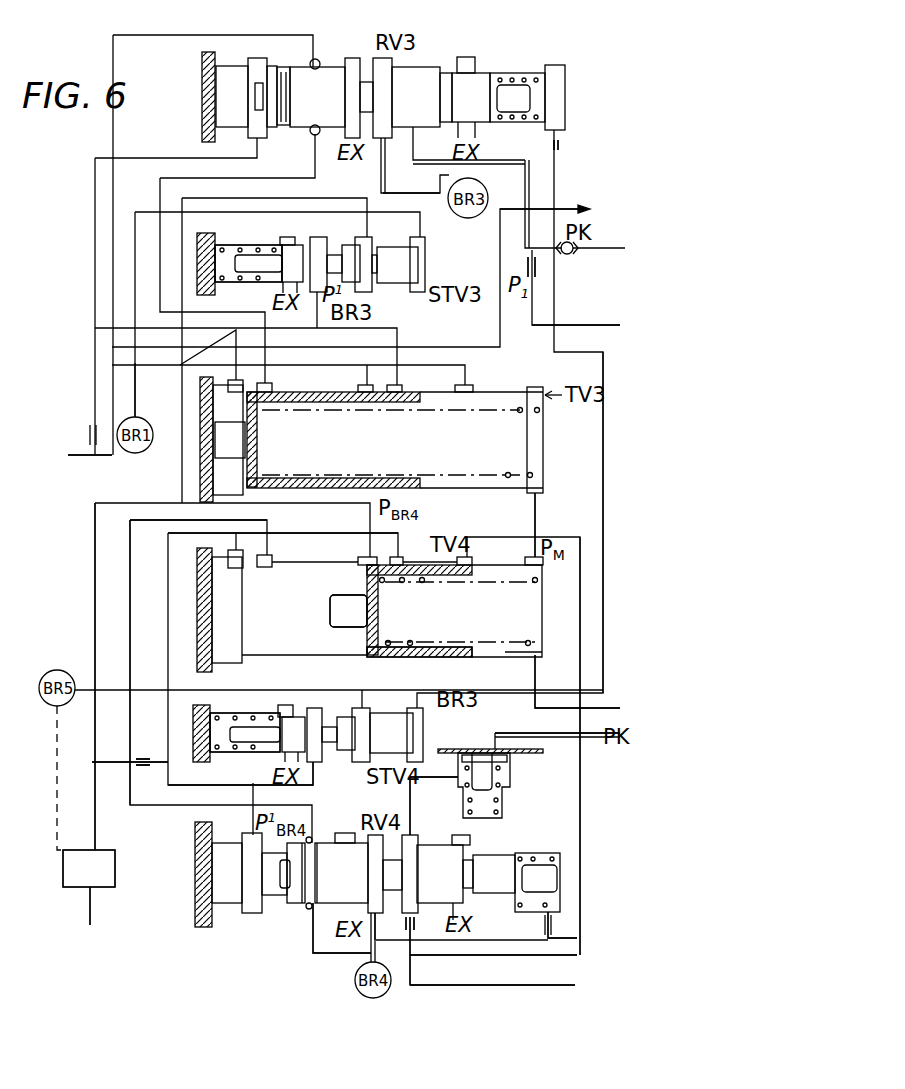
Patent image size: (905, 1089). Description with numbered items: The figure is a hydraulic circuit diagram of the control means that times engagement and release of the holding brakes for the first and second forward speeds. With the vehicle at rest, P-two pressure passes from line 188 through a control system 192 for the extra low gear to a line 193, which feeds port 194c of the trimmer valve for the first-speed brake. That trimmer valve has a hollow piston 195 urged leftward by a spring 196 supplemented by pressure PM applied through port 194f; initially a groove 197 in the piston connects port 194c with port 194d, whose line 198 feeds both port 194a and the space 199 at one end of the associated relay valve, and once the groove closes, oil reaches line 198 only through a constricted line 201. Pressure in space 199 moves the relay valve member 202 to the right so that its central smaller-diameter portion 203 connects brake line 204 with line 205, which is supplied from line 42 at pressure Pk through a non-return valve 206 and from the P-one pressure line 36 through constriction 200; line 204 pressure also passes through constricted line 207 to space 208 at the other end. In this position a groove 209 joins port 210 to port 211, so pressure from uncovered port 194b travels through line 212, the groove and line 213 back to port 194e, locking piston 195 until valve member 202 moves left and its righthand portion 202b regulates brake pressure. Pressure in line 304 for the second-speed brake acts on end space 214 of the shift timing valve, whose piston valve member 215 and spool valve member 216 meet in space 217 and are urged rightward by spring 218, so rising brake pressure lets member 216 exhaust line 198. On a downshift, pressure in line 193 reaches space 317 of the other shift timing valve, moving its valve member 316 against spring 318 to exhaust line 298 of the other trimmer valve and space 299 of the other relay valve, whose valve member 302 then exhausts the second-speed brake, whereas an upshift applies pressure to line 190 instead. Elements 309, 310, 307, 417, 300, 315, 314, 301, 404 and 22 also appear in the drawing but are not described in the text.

The space 299 is at (257, 58).
The valve spool 309 is at (284, 67).
The valve member 302 is at (320, 76).
The line 298 is at (162, 153).
The valve port 310 is at (299, 108).
The line 304 is at (436, 195).
The sensor 307 is at (559, 158).
The output line 417 is at (568, 209).
The line 42 is at (527, 735).
The sensor 300 is at (537, 268).
The P1 pressure line 36 is at (610, 325).
The valve member 316 is at (296, 262).
The spring 318 is at (223, 283).
The space 317 is at (363, 282).
The valve body 315 is at (398, 273).
The valve end 314 is at (420, 287).
The sensor 301 is at (88, 432).
The line 404 is at (135, 400).
The line 190 is at (85, 456).
The line 22 is at (537, 510).
The port 194d is at (398, 540).
The port 194e is at (470, 546).
The line 198 is at (340, 532).
The port 194b is at (270, 562).
The port 194c is at (362, 566).
The groove 197 is at (492, 550).
The line 212 is at (130, 552).
The port 194a is at (238, 570).
The line 193 is at (95, 610).
The hollow piston 195 is at (368, 638).
The spring 196 is at (432, 650).
The port 194f is at (530, 656).
The spool valve member 216 is at (297, 720).
The space 217 is at (362, 712).
The piston valve member 215 is at (395, 715).
The end space 214 is at (420, 758).
The constricted line 201 is at (143, 758).
The spring 218 is at (220, 753).
The line 205 is at (410, 797).
The non-return valve 206 is at (512, 775).
The control system for the extra low gear 192 is at (78, 857).
The port 210 is at (313, 840).
The central smaller diameter portion 203 is at (443, 845).
The space 208 is at (527, 853).
The constricted line 207 is at (576, 862).
The space 199 is at (252, 905).
The groove 209 is at (310, 904).
The port 211 is at (309, 910).
The valve member 202 is at (325, 872).
The line 204 is at (368, 958).
The constriction 200 is at (412, 925).
The righthand portion 202b is at (468, 880).
The line 213 is at (580, 955).
The line 188 is at (90, 908).